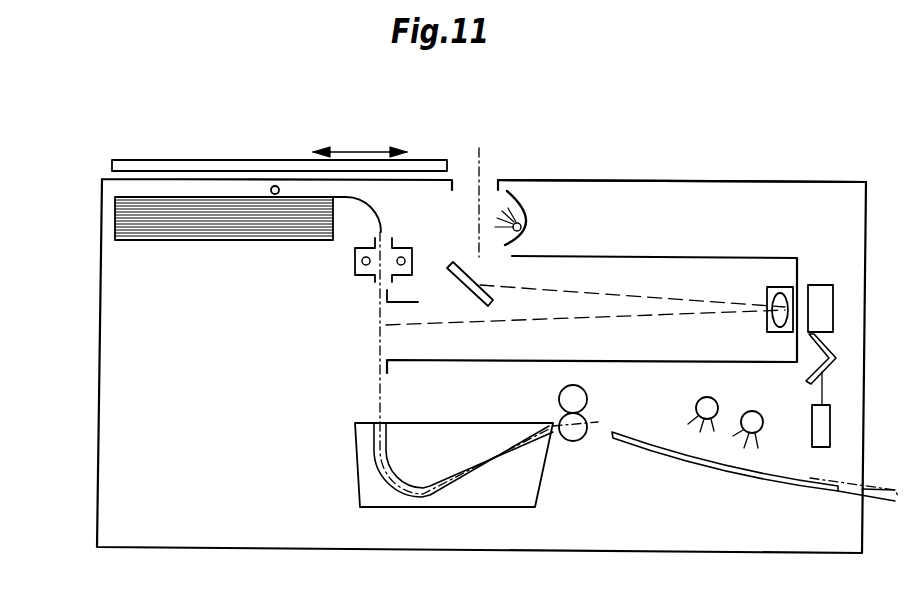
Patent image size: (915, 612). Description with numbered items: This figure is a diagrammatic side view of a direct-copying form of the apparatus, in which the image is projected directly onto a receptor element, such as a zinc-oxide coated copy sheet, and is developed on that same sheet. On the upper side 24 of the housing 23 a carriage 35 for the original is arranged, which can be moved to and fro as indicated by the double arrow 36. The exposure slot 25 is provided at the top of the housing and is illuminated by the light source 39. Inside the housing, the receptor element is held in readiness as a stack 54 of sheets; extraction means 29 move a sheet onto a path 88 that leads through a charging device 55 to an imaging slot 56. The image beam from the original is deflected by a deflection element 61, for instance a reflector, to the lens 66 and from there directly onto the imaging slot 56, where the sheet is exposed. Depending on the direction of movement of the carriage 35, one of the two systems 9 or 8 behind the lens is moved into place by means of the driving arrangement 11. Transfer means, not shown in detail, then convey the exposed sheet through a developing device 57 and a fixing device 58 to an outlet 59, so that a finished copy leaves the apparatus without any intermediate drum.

The system 8 is at (822, 293).
The system 9 is at (836, 363).
The driving arrangement 11 is at (830, 425).
The housing 23 is at (97, 413).
The upper side 24 is at (680, 182).
The exposure slot 25 is at (490, 180).
The extraction means 29 is at (275, 186).
The carriage 35 is at (205, 163).
The double arrow 36 is at (357, 152).
The light source 39 is at (530, 224).
The stack 54 is at (165, 225).
The charging device 55 is at (357, 267).
The imaging slot 56 is at (387, 347).
The developing device 57 is at (372, 483).
The fixing device 58 is at (720, 450).
The outlet 59 is at (883, 490).
The deflection element 61 is at (451, 265).
The lens 66 is at (773, 290).
The path 88 is at (378, 215).